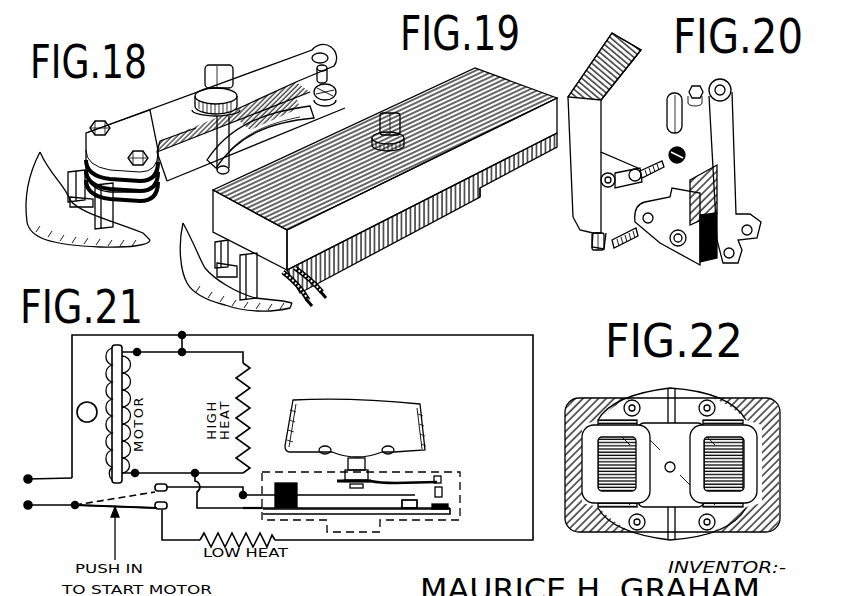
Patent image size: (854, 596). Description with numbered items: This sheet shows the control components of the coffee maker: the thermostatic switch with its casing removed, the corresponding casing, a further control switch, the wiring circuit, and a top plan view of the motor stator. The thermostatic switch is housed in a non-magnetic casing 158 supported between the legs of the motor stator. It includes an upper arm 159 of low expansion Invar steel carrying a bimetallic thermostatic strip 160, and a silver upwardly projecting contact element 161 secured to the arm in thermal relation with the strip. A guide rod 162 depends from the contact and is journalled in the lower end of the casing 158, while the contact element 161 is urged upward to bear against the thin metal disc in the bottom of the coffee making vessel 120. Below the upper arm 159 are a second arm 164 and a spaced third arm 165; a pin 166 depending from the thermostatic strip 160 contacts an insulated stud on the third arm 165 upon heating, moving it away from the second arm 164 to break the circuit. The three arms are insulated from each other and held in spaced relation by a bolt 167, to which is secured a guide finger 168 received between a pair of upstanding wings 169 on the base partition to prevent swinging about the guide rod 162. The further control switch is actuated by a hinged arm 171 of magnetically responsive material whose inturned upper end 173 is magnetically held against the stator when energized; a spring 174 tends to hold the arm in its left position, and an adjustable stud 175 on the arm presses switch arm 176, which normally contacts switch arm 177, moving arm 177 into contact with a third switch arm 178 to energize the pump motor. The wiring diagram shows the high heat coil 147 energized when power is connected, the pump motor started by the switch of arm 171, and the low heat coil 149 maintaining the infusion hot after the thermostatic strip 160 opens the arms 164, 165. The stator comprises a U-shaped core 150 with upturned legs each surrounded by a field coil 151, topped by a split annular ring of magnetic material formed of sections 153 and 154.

In FIG. 21, the coffee making vessel 120 is at (423, 407).
In FIG. 21, the annular electric heating unit 147 is at (250, 377).
In FIG. 21, the second electric heating unit 149 is at (236, 534).
In FIG. 22, the U-shaped core 150 is at (603, 437).
In FIG. 22, the field coil 151 is at (605, 403).
In FIG. 22, the split annular ring section 153 is at (648, 528).
In FIG. 22, the split annular ring section 154 is at (692, 528).
In FIG. 19, the non-magnetic casing 158 is at (435, 233).
In FIG. 21, the non-magnetic casing 158 is at (460, 503).
In FIG. 18, the upper arm 159 is at (215, 113).
In FIG. 18, the bimetallic thermostatic strip 160 is at (263, 77).
In FIG. 21, the bimetallic thermostatic strip 160 is at (413, 480).
In FIG. 18, the contact element 161 is at (215, 63).
In FIG. 19, the contact element 161 is at (385, 110).
In FIG. 21, the contact element 161 is at (347, 463).
In FIG. 18, the guide rod 162 is at (213, 168).
In FIG. 18, the second arm 164 is at (273, 123).
In FIG. 21, the second arm 164 is at (350, 500).
In FIG. 18, the third arm 165 is at (336, 100).
In FIG. 21, the third arm 165 is at (393, 513).
In FIG. 18, the pin 166 is at (324, 67).
In FIG. 21, the pin 166 is at (447, 488).
In FIG. 18, the bolt 167 is at (138, 152).
In FIG. 18, the guide finger 168 is at (75, 203).
In FIG. 19, the guide finger 168 is at (217, 298).
In FIG. 18, the upstanding wings 169 is at (100, 213).
In FIG. 19, the upstanding wings 169 is at (243, 272).
In FIG. 20, the arm 171 is at (583, 188).
In FIG. 20, the inturned upper end 173 is at (613, 42).
In FIG. 20, the spring 174 is at (623, 253).
In FIG. 20, the adjustable stud 175 is at (648, 163).
In FIG. 20, the switch arm 176 is at (670, 112).
In FIG. 20, the switch arm 177 is at (705, 200).
In FIG. 21, the switch arm 177 is at (127, 508).
In FIG. 20, the third switch arm 178 is at (723, 110).